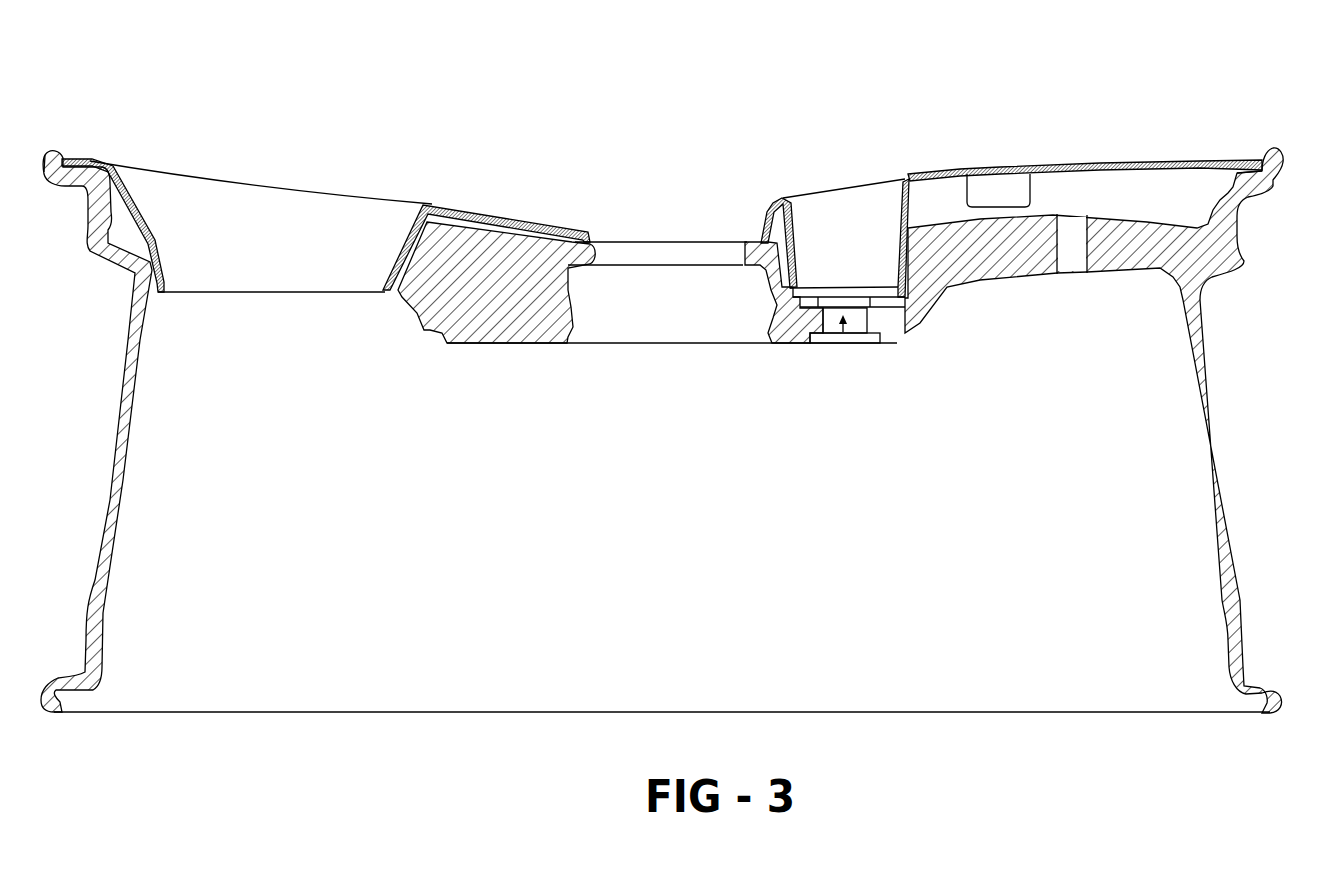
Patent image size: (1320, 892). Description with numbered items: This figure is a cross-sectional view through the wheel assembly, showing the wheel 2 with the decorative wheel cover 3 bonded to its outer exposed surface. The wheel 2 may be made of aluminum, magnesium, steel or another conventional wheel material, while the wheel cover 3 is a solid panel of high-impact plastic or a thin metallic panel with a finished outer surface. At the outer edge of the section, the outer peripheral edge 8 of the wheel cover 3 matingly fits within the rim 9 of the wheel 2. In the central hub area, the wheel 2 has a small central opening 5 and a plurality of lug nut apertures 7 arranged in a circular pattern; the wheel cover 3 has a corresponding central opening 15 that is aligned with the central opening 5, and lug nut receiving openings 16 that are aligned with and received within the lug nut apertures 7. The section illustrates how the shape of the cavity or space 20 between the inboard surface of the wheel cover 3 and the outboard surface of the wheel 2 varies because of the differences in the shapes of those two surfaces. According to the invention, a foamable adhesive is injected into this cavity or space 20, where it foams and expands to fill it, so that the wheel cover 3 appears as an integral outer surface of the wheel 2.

The wheel 2 is at (1212, 437).
The wheel cover 3 is at (1168, 162).
The central opening 5 is at (670, 374).
The lug nut apertures 7 is at (843, 345).
The outer peripheral edge 8 is at (70, 162).
The rim 9 is at (62, 150).
The central opening 15 is at (689, 226).
The lug nut receiving openings 16 is at (839, 208).
The cavity or space 20 is at (120, 250).